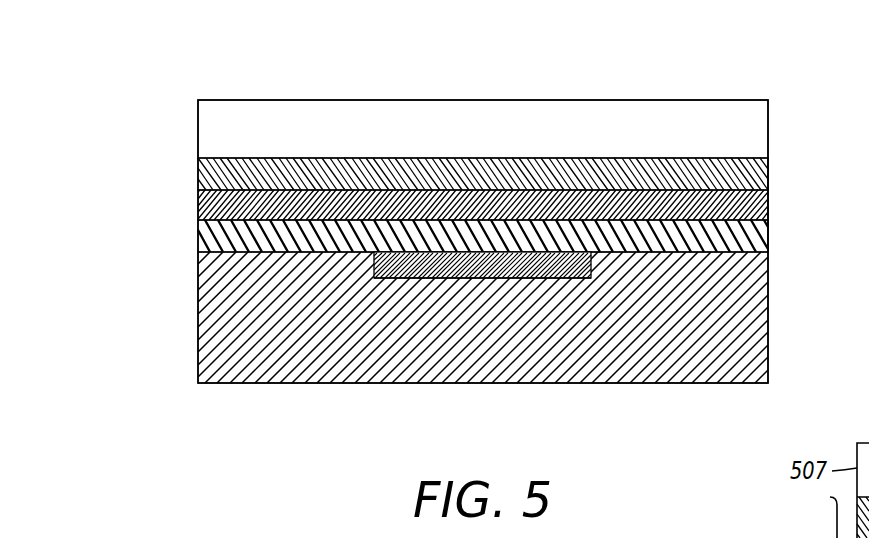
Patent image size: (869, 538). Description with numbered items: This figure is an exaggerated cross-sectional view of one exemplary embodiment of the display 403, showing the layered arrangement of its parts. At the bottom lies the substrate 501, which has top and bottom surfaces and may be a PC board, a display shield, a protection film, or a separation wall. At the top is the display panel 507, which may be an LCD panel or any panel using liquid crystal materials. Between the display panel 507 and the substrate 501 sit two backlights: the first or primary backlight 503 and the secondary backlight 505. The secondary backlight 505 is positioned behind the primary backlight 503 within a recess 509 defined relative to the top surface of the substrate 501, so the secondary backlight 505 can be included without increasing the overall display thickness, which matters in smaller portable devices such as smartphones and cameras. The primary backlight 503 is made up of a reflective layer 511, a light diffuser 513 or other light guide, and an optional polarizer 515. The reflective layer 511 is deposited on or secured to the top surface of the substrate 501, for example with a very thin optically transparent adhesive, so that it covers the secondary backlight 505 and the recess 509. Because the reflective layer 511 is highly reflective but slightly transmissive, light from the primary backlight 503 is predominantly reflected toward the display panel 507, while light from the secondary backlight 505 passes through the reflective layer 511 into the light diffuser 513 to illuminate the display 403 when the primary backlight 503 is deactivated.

The display 403 is at (312, 427).
The substrate 501 is at (198, 316).
The primary backlight 503 is at (798, 159).
The secondary backlight 505 is at (593, 263).
The display panel 507 is at (198, 129).
The recess 509 is at (475, 279).
The reflective layer 511 is at (198, 236).
The light diffuser 513 is at (198, 204).
The polarizer 515 is at (198, 174).